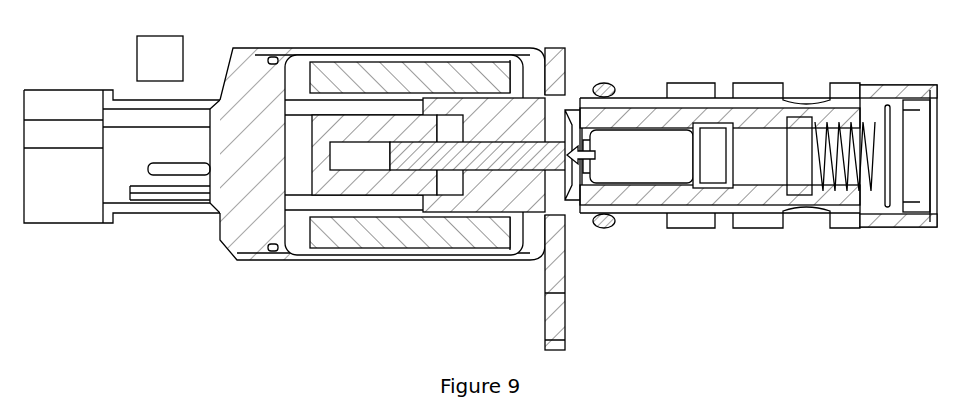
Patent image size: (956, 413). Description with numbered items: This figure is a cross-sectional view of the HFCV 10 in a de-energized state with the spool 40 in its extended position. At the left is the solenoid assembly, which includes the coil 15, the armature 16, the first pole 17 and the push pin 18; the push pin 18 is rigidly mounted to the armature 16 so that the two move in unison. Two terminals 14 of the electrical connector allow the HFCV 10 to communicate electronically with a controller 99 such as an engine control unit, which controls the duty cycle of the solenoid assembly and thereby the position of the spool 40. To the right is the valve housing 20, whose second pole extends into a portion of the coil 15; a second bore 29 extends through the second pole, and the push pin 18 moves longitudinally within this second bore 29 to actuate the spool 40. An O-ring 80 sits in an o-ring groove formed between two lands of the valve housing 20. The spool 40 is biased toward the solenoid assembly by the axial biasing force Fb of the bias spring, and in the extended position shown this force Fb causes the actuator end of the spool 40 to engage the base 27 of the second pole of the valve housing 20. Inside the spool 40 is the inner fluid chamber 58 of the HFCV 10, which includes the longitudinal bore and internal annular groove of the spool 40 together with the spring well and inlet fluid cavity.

The HFCV 10 is at (780, 55).
The terminals 14 is at (197, 167).
The coil 15 is at (430, 78).
The armature 16 is at (388, 120).
The first pole 17 is at (343, 105).
The push pin 18 is at (420, 190).
The valve housing 20 is at (708, 93).
The base 27 is at (568, 110).
The second bore 29 is at (515, 135).
The spool 40 is at (640, 118).
The inner fluid chamber 58 is at (647, 167).
The O-ring 80 is at (606, 228).
The controller 99 is at (170, 165).
The axial biasing force Fb is at (585, 162).